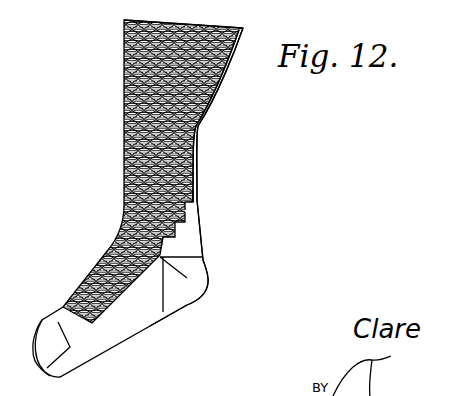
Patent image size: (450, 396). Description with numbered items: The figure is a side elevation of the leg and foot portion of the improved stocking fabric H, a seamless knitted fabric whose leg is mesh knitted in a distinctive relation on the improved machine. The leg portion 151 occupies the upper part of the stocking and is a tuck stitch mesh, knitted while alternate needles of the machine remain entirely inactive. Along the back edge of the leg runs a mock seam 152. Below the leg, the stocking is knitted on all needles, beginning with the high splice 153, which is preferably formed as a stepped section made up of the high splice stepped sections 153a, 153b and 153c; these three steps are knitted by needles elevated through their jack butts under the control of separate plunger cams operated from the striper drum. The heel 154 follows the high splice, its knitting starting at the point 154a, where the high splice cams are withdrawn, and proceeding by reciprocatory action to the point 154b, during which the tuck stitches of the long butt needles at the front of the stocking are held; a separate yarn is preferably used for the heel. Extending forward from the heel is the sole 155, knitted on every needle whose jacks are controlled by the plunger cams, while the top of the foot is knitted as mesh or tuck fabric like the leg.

The fabric H is at (123, 177).
The leg portion 151 is at (126, 127).
The mock seam 152 is at (214, 110).
The high splice stepped section 153a is at (196, 205).
The high splice stepped section 153b is at (186, 225).
The high splice stepped section 153c is at (176, 239).
The high splice 153 is at (192, 243).
The start of knitting of the heel 154a is at (205, 258).
The heel 154 is at (193, 290).
The end point of heel knitting 154b is at (170, 296).
The sole 155 is at (118, 322).